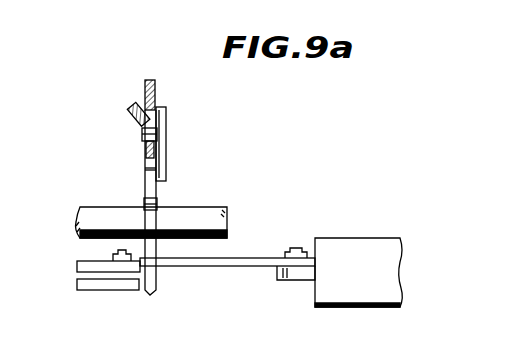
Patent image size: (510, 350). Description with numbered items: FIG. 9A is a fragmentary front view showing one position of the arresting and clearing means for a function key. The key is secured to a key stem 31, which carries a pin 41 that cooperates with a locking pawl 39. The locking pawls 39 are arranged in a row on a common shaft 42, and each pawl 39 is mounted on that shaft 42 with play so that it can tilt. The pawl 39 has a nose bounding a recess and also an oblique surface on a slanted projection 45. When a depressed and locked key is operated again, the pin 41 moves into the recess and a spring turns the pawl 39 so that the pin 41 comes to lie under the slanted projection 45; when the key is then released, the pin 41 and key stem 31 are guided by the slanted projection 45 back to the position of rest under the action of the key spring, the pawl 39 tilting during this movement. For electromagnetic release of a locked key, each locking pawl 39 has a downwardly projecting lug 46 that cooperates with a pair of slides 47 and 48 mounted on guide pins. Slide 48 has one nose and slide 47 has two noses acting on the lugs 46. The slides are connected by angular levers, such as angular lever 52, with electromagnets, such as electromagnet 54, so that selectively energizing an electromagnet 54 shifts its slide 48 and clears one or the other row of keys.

The key stem 31 is at (163, 131).
The locking pawl 39 is at (158, 203).
The pin 41 is at (143, 133).
The common shaft 42 is at (120, 207).
The slanted projection 45 is at (141, 110).
The downwardly projecting lug 46 is at (150, 293).
The slide 47 is at (80, 262).
The slide 48 is at (95, 290).
The angular lever 52 is at (258, 258).
The electromagnet 54 is at (358, 257).